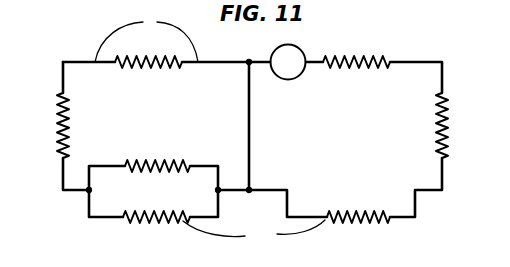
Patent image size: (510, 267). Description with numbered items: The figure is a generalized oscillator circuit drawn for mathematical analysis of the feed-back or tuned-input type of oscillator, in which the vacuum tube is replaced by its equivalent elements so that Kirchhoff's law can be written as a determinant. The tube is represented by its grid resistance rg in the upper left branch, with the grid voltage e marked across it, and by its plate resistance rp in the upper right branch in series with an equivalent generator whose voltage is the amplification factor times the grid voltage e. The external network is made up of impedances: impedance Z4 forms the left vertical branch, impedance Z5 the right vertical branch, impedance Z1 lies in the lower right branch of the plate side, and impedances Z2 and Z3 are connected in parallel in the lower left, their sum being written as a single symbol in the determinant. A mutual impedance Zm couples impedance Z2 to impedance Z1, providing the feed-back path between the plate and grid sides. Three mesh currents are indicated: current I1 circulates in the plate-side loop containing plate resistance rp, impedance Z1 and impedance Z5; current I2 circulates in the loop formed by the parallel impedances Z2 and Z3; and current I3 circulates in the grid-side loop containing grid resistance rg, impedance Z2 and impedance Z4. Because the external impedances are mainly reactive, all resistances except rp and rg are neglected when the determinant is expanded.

The grid resistance rg is at (148, 52).
The plate resistance rp is at (356, 51).
The grid voltage e is at (146, 38).
The impedance Z1 is at (358, 231).
The impedance Z2 is at (156, 231).
The impedance Z3 is at (157, 154).
The impedance Z4 is at (48, 125).
The impedance Z5 is at (456, 125).
The mutual impedance Zm is at (254, 233).
The current I1 is at (362, 123).
The current I2 is at (172, 182).
The current I3 is at (176, 91).